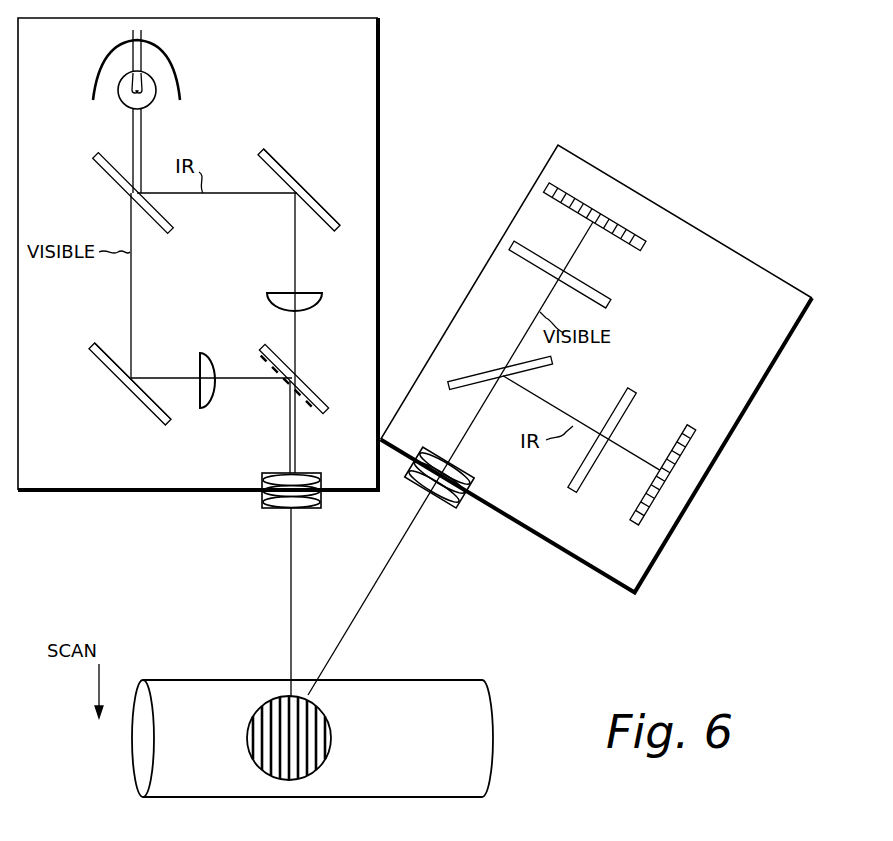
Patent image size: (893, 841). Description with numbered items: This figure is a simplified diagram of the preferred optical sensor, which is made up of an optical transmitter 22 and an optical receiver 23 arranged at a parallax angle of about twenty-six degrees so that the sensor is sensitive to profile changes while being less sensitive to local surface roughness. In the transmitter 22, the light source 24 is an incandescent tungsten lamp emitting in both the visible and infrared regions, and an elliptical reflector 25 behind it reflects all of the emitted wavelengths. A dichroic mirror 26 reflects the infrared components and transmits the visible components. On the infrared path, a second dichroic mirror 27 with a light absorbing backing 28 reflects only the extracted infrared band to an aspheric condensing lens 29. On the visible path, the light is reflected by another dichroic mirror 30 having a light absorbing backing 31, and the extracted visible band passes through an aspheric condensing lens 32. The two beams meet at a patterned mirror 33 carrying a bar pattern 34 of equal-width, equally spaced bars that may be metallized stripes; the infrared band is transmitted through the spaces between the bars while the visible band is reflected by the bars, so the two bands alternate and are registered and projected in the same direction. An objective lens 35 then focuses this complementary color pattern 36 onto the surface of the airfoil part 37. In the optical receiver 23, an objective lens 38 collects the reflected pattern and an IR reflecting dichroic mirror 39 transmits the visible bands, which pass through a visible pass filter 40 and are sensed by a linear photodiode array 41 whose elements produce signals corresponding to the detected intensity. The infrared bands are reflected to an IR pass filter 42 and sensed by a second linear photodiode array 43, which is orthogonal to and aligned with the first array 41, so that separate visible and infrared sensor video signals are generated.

The optical transmitter 22 is at (384, 121).
The optical receiver 23 is at (762, 261).
The light source 24 is at (121, 103).
The elliptical reflector 25 is at (170, 72).
The dichroic mirror 26 is at (104, 176).
The second dichroic mirror 27 is at (258, 164).
The light absorbing backing 28 is at (288, 158).
The aspheric condensing lens 29 is at (312, 312).
The dichroic mirror 30 is at (105, 345).
The light absorbing backing 31 is at (102, 362).
The aspheric condensing lens 32 is at (207, 352).
The patterned mirror 33 is at (278, 393).
The bar pattern 34 is at (312, 381).
The objective lens 35 is at (262, 508).
The complementary color pattern 36 is at (325, 752).
The airfoil part 37 is at (232, 680).
The objective lens 38 is at (450, 510).
The IR reflecting dichroic mirror 39 is at (466, 380).
The visible pass filter 40 is at (606, 290).
The linear photodiode array 41 is at (642, 243).
The IR pass filter 42 is at (636, 394).
The second linear photodiode array 43 is at (690, 436).